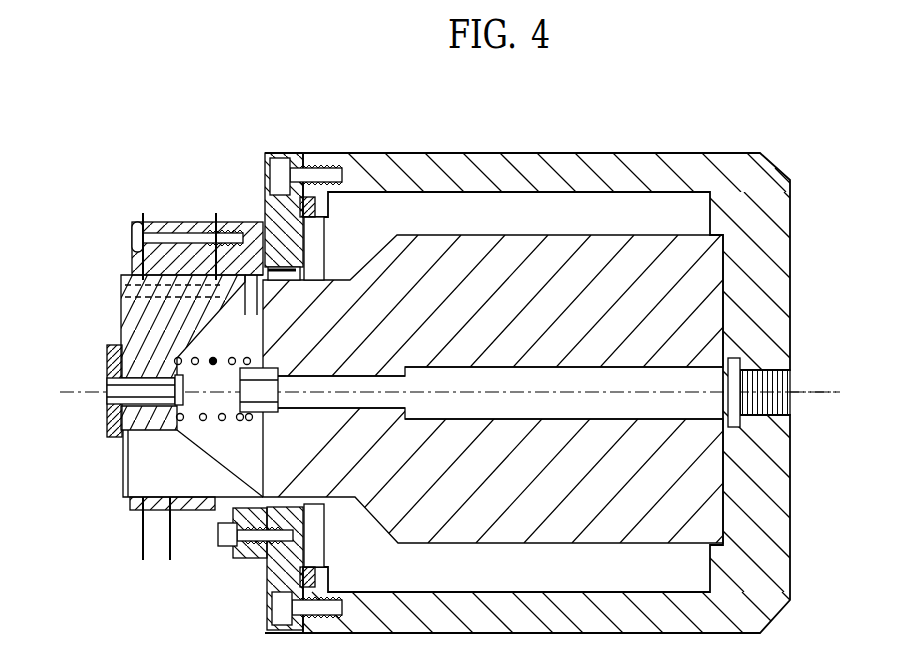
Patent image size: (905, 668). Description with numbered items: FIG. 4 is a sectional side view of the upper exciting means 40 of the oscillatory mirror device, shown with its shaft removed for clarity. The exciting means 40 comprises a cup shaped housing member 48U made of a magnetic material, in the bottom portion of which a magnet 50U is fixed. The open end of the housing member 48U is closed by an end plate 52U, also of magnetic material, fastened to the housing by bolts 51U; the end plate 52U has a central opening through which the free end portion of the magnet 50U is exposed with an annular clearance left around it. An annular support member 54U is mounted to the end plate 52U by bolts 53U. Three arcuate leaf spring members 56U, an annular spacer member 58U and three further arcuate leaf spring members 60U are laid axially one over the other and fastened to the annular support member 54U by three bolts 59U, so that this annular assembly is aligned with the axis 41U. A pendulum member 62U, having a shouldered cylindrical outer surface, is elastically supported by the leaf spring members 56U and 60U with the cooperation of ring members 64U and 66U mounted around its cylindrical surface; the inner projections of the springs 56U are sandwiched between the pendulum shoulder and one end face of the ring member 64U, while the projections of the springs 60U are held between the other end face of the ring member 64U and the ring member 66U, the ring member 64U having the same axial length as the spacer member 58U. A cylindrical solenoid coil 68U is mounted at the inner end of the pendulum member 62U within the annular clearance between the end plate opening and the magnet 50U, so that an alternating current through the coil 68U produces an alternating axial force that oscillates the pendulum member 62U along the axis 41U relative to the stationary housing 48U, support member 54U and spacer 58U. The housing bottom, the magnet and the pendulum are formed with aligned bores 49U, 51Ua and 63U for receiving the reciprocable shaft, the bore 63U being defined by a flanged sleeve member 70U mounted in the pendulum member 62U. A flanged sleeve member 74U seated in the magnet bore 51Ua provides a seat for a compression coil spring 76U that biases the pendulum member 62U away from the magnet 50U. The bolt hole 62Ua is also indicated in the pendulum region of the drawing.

The exciting means 40 is at (722, 150).
The cup shaped housing member 48U is at (598, 160).
The magnet 50U is at (710, 278).
The bolts 51U is at (321, 165).
The bore 51Ua is at (570, 415).
The end plate 52U is at (275, 612).
The bolts 53U is at (228, 548).
The annular support member 54U is at (262, 232).
The arcuate leaf spring members 56U is at (263, 590).
The annular spacer member 58U is at (172, 222).
The bolts 59U is at (130, 240).
The arcuate leaf spring members 60U is at (143, 560).
The pendulum member 62U is at (120, 312).
The bolt hole 62Ua is at (118, 290).
The bore 63U is at (107, 382).
The ring member 64U is at (170, 560).
The ring member 66U is at (125, 500).
The cylindrical solenoid coil 68U is at (322, 260).
The sleeve member 70U is at (108, 402).
The flanged sleeve member 74U is at (258, 362).
The compression coil spring 76U is at (203, 420).
The axis 41U is at (822, 390).
The bore 49U is at (793, 408).